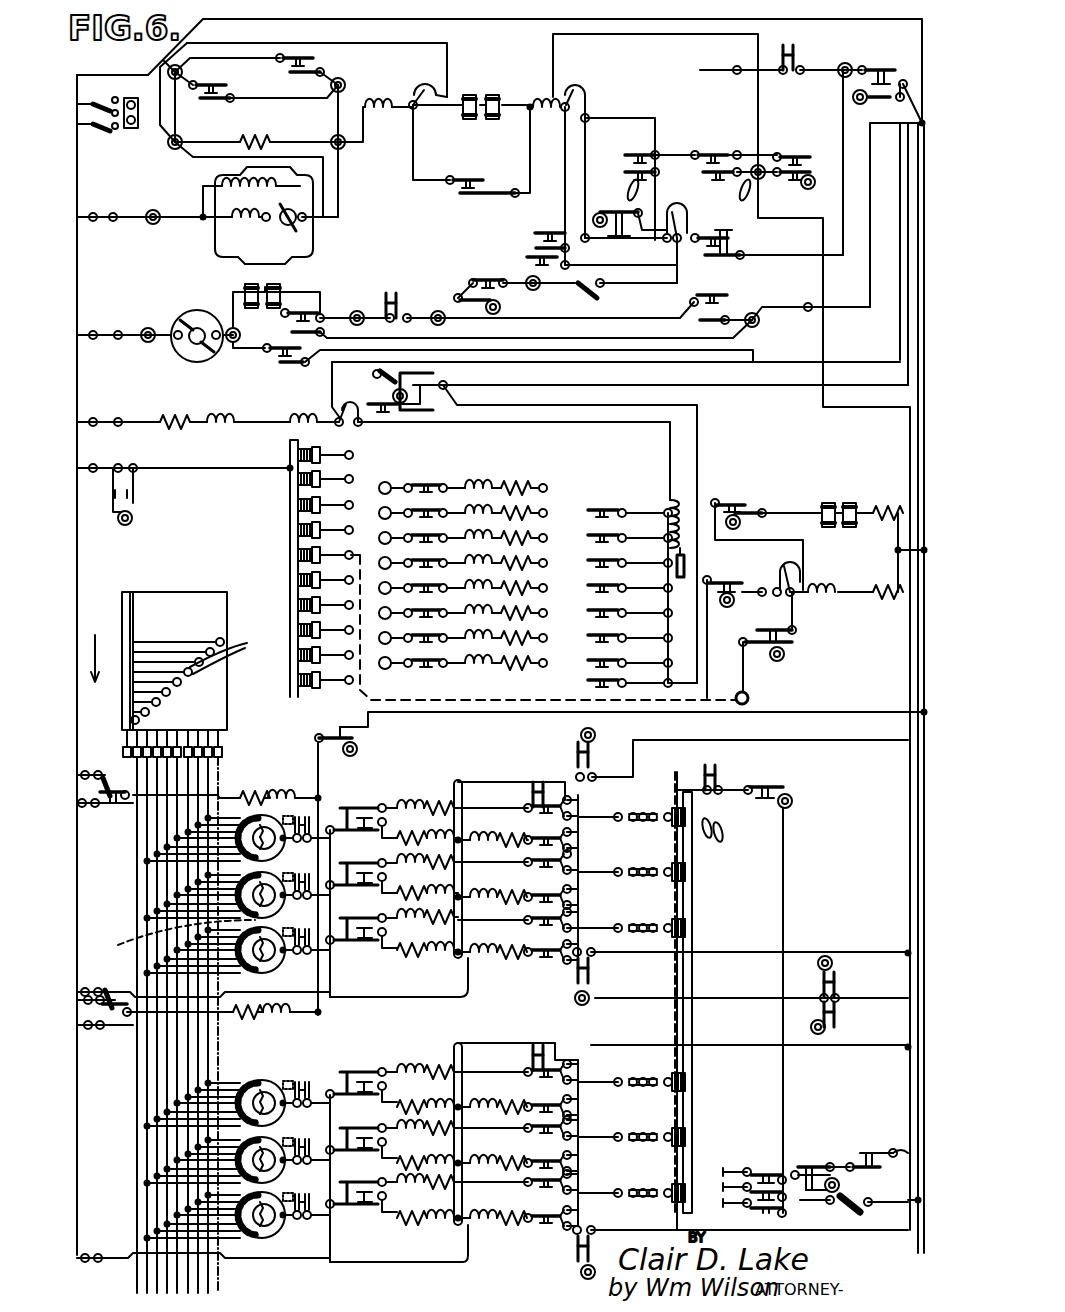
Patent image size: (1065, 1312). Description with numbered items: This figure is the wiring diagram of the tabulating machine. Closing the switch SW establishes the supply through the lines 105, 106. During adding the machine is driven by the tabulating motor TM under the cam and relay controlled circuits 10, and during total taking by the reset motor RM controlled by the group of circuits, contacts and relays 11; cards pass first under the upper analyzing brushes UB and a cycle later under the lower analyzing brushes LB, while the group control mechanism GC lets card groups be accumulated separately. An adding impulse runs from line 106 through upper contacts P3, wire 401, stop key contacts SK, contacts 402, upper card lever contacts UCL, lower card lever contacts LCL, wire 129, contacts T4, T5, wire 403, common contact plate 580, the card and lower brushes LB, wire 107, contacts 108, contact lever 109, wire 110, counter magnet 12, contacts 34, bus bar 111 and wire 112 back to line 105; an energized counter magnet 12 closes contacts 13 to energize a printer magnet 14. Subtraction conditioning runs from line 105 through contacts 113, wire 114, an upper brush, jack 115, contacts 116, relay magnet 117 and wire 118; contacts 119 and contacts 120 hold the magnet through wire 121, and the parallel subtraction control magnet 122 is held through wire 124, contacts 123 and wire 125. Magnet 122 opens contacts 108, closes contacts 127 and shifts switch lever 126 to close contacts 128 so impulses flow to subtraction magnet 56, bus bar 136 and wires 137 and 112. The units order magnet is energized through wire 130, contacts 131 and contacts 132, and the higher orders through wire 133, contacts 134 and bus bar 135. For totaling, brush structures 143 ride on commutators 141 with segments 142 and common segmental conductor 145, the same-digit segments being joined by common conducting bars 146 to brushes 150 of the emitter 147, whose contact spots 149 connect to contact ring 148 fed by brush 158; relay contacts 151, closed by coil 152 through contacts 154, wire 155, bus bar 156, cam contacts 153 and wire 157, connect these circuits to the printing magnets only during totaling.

The line 106 is at (486, 30).
The cam and relay controlled circuits 10 is at (545, 167).
The upper contacts P3 is at (892, 78).
The wire 401 is at (840, 128).
The upper card lever contacts UCL is at (611, 164).
The lower card lever contacts LCL is at (712, 164).
The contacts 402 is at (690, 232).
The stop key contacts SK is at (700, 260).
The circuits, contacts and relays 11 is at (595, 307).
The reset motor RM is at (488, 333).
The line 105 is at (78, 404).
The wire 114 is at (207, 478).
The contacts 113 is at (130, 505).
The upper analyzing brushes UB is at (299, 568).
The group control mechanism GC is at (542, 561).
The contacts 123 is at (746, 501).
The wire 124 is at (757, 552).
The subtraction control magnet 122 is at (840, 530).
The wire 125 is at (895, 500).
The wire 118 is at (862, 596).
The relay magnet 117 is at (814, 602).
The relay contacts 119 is at (800, 578).
The contacts 120 is at (746, 580).
The contacts 116 is at (790, 640).
The jack 115 is at (748, 696).
The wire 121 is at (445, 708).
The emitter 147 is at (159, 661).
The contact ring 148 is at (124, 604).
The contact spots 149 is at (238, 650).
The brushes 150 is at (218, 737).
The brush 158 is at (126, 736).
The common conducting bars 146 is at (128, 882).
The bus bar 156 is at (312, 740).
The cam contacts 153 is at (358, 738).
The wire 157 is at (440, 712).
The contacts 154 is at (120, 808).
The wire 155 is at (220, 790).
The coil 152 is at (283, 785).
The commutators 141 is at (265, 960).
The brush structure 143 is at (270, 840).
The common segmental conductor 145 is at (272, 848).
The relay contacts 151 is at (296, 925).
The segments 142 is at (260, 1085).
The wire 112 is at (233, 1000).
The bus bar 111 is at (332, 972).
The contacts 34 is at (331, 822).
The contacts 13 is at (384, 806).
The counter magnet 12 is at (398, 975).
The printer magnet 14 is at (441, 1039).
The wire 110 is at (462, 815).
The wire 137 is at (372, 1000).
The bus bar 136 is at (468, 1010).
The subtraction magnet 56 is at (478, 975).
The contacts 108 is at (532, 812).
The contact lever 109 is at (528, 804).
The contacts 127 is at (532, 787).
The switch lever 126 is at (530, 842).
The contacts 128 is at (552, 845).
The contacts 132 is at (538, 901).
The bus bar 135 is at (581, 823).
The wire 107 is at (608, 830).
The lower analyzing brushes LB is at (698, 1001).
The wire 133 is at (810, 742).
The contacts 134 is at (598, 745).
The common contact plate 580 is at (700, 967).
The wire 130 is at (730, 948).
The contacts 131 is at (592, 990).
The wire 403 is at (710, 993).
The contacts T4 is at (840, 989).
The contacts T5 is at (840, 1031).
The wire 129 is at (908, 875).
The switch SW is at (107, 126).
The tabulating motor TM is at (207, 215).